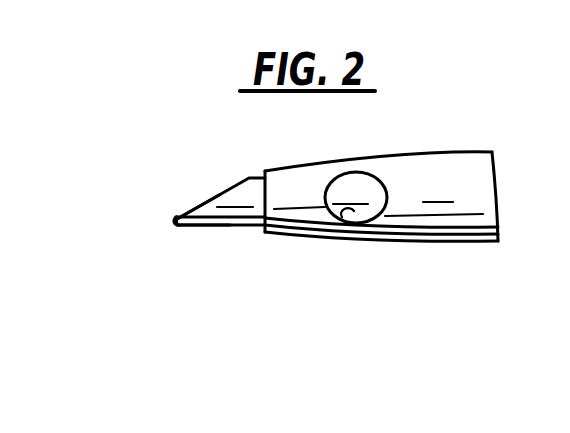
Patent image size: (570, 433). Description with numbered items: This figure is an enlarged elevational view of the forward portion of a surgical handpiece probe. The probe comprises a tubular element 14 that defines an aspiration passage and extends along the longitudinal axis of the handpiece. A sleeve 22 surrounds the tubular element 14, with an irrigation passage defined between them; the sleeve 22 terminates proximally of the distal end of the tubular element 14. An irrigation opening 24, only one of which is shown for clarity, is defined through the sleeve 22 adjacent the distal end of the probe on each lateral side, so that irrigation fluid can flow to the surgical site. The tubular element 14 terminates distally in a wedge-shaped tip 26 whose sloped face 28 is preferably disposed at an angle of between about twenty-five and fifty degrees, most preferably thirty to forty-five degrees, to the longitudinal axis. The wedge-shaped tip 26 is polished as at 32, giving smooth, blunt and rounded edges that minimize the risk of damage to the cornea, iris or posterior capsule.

The tubular element 14 is at (233, 245).
The sleeve 22 is at (413, 162).
The irrigation opening 24 is at (350, 218).
The wedge-shaped tip 26 is at (185, 228).
The sloped face 28 is at (205, 198).
The polished edge 32 is at (246, 158).